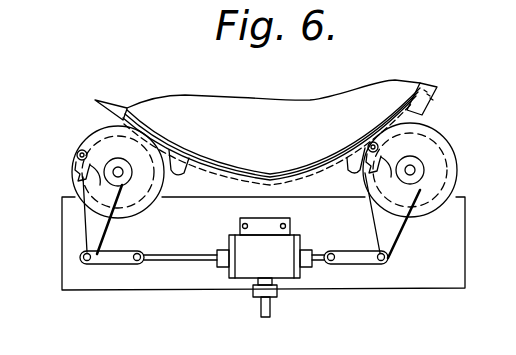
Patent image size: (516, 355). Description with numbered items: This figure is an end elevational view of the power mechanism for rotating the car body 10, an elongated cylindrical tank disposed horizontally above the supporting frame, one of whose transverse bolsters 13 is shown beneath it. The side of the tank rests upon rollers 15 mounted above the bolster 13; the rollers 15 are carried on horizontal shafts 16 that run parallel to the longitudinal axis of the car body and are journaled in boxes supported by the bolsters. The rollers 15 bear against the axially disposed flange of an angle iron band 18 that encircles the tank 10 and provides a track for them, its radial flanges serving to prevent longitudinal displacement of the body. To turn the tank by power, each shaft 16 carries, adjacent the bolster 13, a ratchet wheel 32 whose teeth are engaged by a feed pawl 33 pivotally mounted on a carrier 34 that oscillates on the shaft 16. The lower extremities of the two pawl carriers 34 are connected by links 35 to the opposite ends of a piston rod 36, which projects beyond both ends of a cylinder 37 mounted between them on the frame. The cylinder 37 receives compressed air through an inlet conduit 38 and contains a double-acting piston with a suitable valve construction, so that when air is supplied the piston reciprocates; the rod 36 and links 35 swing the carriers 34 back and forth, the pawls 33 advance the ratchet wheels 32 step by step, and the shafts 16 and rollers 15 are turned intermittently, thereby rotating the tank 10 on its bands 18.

The car body 10 is at (361, 95).
The bolster 13 is at (445, 242).
The roller 15 is at (102, 135).
The horizontal shaft 16 is at (120, 171).
The angle iron band 18 is at (410, 98).
The ratchet wheel 32 is at (140, 178).
The feed pawl 33 is at (75, 167).
The pawl carrier 34 is at (112, 195).
The link 35 is at (118, 255).
The piston rod 36 is at (197, 257).
The cylinder 37 is at (264, 248).
The inlet conduit 38 is at (262, 317).